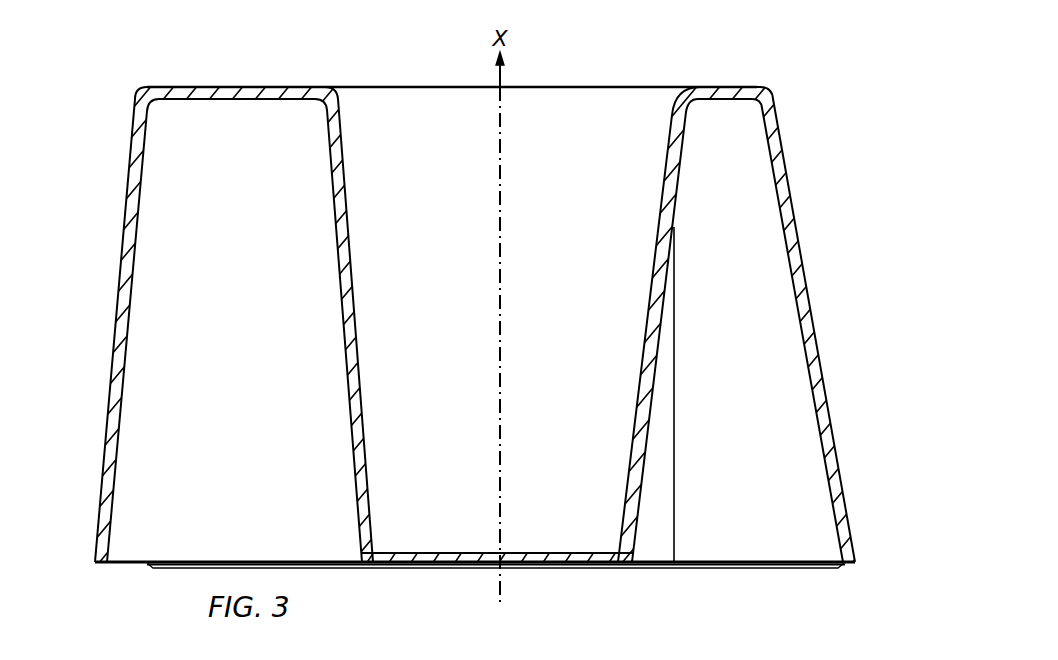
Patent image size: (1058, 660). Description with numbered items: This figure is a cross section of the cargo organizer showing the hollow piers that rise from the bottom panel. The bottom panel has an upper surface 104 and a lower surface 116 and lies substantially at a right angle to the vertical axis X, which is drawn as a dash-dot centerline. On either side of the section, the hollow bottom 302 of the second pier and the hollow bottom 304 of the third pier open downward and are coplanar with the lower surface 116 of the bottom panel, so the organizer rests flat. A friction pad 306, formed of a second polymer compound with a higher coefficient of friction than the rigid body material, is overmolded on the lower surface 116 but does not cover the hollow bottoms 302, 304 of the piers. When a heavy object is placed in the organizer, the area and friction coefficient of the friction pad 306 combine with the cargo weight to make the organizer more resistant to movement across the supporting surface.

The hollow bottom of the second pier 302 is at (209, 497).
The hollow bottom of the third pier 304 is at (730, 497).
The upper surface 104 is at (558, 550).
The lower surface 116 is at (549, 567).
The friction pad 306 is at (462, 568).